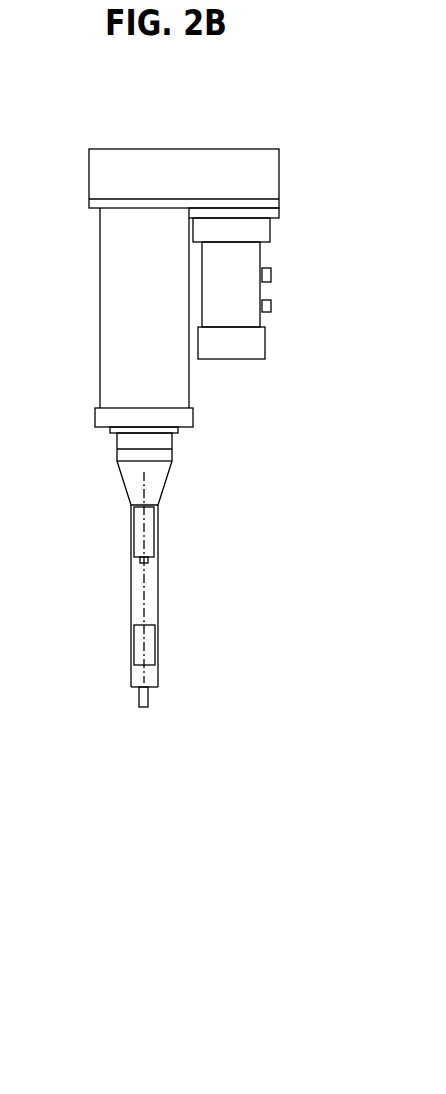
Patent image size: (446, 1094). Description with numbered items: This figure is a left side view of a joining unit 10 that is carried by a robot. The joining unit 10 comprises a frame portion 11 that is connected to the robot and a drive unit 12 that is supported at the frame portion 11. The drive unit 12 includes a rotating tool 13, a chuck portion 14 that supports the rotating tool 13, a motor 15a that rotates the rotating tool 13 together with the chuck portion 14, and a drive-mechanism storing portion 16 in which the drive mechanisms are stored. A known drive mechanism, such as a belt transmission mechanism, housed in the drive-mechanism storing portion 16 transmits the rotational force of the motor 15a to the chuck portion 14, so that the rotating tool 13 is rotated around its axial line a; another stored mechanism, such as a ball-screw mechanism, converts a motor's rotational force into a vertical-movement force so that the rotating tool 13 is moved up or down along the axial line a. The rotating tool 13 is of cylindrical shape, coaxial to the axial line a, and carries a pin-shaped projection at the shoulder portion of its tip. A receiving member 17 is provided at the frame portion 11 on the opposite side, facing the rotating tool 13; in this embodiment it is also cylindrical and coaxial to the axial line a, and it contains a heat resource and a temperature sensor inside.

The joining unit 10 is at (277, 126).
The frame portion 11 is at (158, 573).
The drive unit 12 is at (89, 147).
The rotating tool 13 is at (150, 533).
The chuck portion 14 is at (164, 457).
The motor 15a is at (250, 290).
The drive-mechanism storing portion 16 is at (186, 160).
The receiving member 17 is at (149, 645).
The axial line a is at (144, 584).